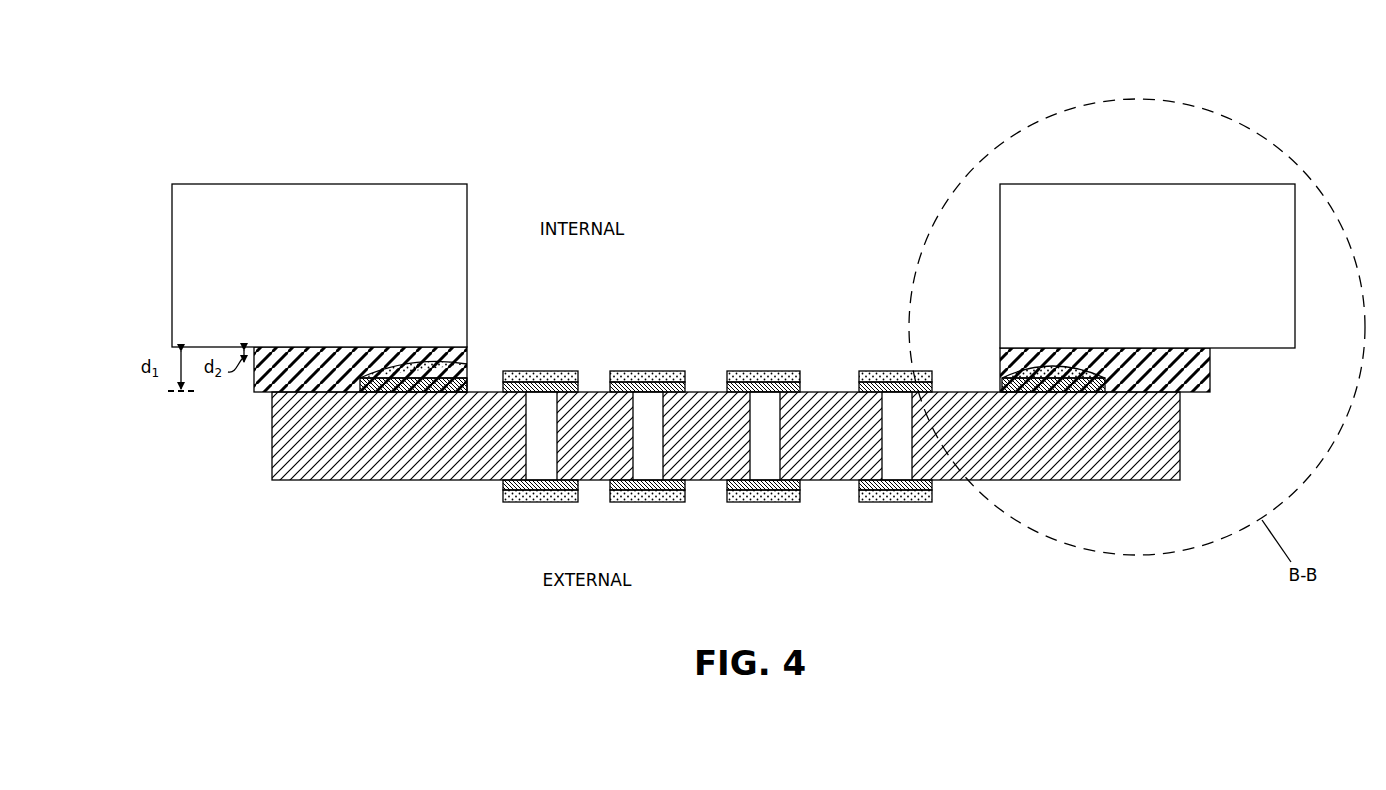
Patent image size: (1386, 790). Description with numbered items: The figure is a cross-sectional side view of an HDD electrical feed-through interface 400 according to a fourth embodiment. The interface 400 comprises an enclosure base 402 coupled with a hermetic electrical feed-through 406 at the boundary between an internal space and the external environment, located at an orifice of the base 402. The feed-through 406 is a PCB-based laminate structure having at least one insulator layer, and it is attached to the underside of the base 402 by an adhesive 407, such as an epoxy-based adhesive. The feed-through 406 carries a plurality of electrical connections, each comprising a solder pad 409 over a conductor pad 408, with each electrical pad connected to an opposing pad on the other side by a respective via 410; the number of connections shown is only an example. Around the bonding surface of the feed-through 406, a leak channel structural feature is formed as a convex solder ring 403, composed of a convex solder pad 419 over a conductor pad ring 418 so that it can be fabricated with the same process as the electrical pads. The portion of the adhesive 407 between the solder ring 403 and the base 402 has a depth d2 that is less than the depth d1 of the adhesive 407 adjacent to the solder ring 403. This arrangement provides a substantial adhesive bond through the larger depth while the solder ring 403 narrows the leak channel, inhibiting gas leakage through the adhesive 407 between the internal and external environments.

The interface 400 is at (536, 64).
The enclosure base 402 is at (733, 266).
The convex solder ring 403 is at (462, 362).
The hermetic electrical feed-through 406 is at (272, 456).
The adhesive 407 is at (262, 385).
The conductor pad 408 is at (860, 386).
The solder pad 409 is at (893, 371).
The via 410 is at (758, 425).
The conductor pad ring 418 is at (1062, 370).
The convex solder pad 419 is at (1037, 368).